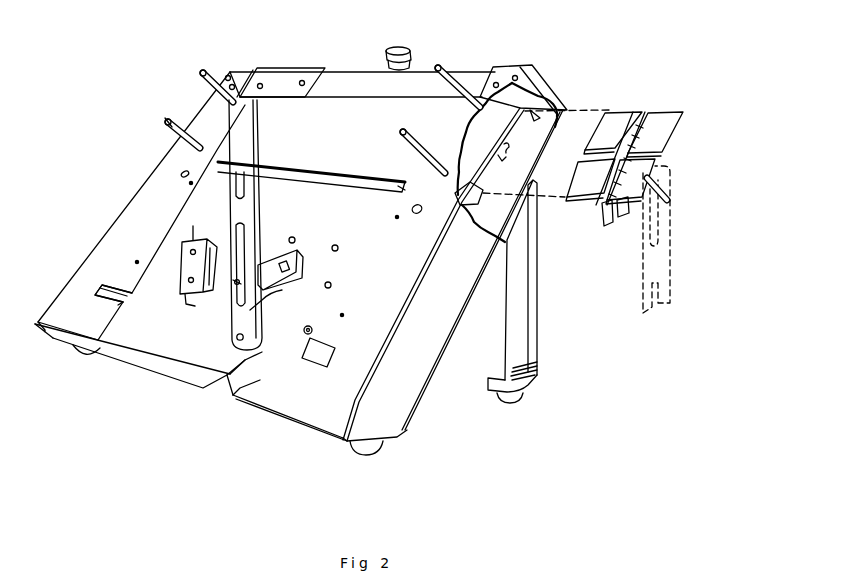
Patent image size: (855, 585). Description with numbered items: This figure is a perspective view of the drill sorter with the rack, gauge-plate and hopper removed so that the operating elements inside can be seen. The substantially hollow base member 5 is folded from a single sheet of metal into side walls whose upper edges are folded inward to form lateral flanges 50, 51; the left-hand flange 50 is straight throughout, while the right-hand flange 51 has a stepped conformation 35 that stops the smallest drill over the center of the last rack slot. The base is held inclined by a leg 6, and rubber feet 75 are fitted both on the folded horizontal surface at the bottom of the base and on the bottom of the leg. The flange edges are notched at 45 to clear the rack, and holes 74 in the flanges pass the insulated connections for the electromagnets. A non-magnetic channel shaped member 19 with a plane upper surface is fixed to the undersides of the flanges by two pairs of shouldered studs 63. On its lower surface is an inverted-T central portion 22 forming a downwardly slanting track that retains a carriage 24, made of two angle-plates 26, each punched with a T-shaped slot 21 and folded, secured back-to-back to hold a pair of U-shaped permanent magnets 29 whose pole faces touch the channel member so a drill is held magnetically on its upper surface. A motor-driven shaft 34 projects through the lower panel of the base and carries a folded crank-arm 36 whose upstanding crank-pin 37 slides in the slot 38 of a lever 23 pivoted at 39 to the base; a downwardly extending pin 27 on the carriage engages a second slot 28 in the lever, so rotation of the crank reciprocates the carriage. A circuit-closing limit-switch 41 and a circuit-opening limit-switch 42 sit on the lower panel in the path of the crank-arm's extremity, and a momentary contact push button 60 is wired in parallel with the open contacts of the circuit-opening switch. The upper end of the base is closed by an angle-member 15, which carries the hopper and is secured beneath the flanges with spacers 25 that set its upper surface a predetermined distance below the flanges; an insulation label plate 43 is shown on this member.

The base member 5 is at (410, 413).
The leg 6 is at (538, 302).
The angle-member 15 is at (340, 75).
The channel shaped member 19 is at (311, 159).
The T-shaped slot 21 is at (613, 150).
The central portion (track) 22 is at (508, 148).
The lever 23 is at (227, 203).
The carriage 24 is at (612, 110).
The spacers 25 is at (258, 70).
The angle-plates 26 is at (627, 215).
The pin 27 is at (670, 198).
The second slot 28 is at (215, 173).
The U-shaped permanent magnets 29 is at (640, 112).
The shaft 34 is at (283, 297).
The stepped conformation 35 is at (445, 97).
The crank-arm 36 is at (283, 291).
The crank-pin 37 is at (237, 284).
The slot 38 is at (238, 233).
The pivot 39 is at (243, 378).
The circuit-closing limit-switch 41 is at (273, 403).
The circuit-opening limit-switch 42 is at (193, 308).
The insulation label plate 43 is at (282, 67).
The notches 45 is at (100, 288).
The lateral flange 50 is at (143, 270).
The lateral flange 51 is at (372, 253).
The momentary contact switch 60 is at (403, 47).
The studs 63 is at (203, 73).
The holes 74 is at (181, 174).
The rubber feet 75 is at (368, 453).